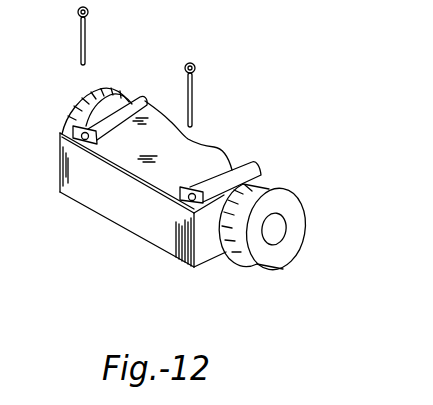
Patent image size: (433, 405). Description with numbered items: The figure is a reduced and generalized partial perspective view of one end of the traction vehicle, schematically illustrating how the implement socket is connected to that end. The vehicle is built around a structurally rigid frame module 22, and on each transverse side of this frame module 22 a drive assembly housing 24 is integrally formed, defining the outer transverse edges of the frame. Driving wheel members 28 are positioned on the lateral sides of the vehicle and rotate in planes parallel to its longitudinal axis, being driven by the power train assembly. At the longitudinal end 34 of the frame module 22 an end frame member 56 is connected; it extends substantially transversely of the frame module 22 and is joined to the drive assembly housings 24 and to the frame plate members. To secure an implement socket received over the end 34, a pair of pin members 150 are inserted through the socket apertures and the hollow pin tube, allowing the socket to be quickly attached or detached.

The frame module 22 is at (221, 148).
The drive assembly housing 24 is at (140, 107).
The driving wheel member 28 is at (279, 257).
The longitudinal end 34 is at (83, 206).
The end frame member 56 is at (157, 230).
The pin member 150 is at (88, 48).